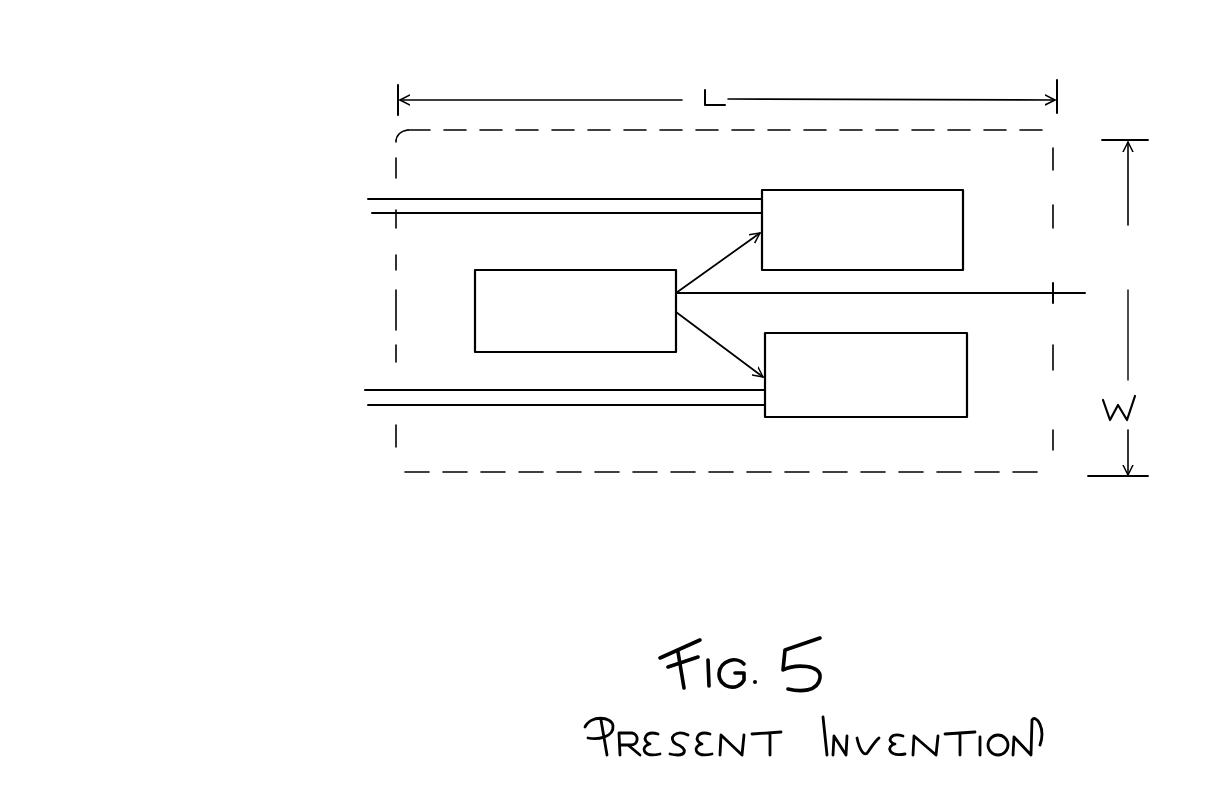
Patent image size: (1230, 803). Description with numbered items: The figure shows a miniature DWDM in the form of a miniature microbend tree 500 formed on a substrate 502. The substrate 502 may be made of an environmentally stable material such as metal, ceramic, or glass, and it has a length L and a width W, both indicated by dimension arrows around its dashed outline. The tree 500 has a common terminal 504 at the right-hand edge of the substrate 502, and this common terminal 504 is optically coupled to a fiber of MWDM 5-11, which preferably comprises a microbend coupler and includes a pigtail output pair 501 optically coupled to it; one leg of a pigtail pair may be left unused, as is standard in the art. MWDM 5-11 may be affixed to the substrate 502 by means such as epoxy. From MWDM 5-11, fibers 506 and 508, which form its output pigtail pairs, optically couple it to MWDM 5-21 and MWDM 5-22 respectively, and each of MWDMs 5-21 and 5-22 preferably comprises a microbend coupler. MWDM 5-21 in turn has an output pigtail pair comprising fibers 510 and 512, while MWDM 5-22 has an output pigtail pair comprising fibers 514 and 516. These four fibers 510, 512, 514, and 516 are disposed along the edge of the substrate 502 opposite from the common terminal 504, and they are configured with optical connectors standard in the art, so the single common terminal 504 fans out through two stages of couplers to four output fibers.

The miniature microbend tree 500 is at (300, 97).
The pigtail output pair 501 is at (680, 298).
The substrate 502 is at (545, 455).
The common terminal 504 is at (1093, 281).
The fiber 506 is at (728, 236).
The fiber 508 is at (726, 370).
The fiber 510 is at (358, 186).
The fiber 512 is at (360, 218).
The fiber 514 is at (351, 380).
The fiber 516 is at (360, 412).
The MWDM 5-11 is at (615, 323).
The MWDM 5-21 is at (915, 243).
The MWDM 5-22 is at (935, 388).